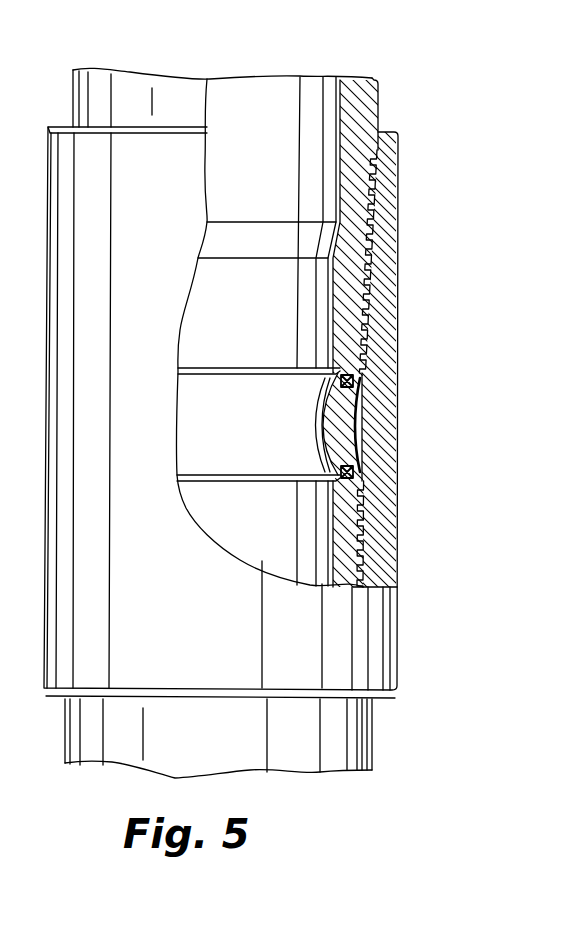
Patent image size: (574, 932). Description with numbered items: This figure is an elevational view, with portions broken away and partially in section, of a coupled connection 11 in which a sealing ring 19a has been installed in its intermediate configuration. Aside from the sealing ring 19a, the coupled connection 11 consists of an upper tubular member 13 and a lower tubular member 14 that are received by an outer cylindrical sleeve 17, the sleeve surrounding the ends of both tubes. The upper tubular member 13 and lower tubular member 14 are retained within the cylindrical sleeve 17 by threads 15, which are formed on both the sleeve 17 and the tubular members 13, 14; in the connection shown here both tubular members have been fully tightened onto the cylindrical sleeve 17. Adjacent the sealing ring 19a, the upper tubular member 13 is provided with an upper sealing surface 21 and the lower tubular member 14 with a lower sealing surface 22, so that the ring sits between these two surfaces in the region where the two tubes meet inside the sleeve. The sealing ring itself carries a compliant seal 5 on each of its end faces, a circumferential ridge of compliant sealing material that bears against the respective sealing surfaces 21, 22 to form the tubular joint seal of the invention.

The compliant seal 5 is at (362, 373).
The coupled connection 11 is at (414, 143).
The upper tubular member 13 is at (376, 86).
The lower tubular member 14 is at (352, 734).
The threads 15 is at (373, 200).
The outer cylindrical sleeve 17 is at (398, 287).
The sealing ring 19a is at (343, 423).
The upper sealing surface 21 is at (345, 381).
The lower sealing surface 22 is at (342, 470).